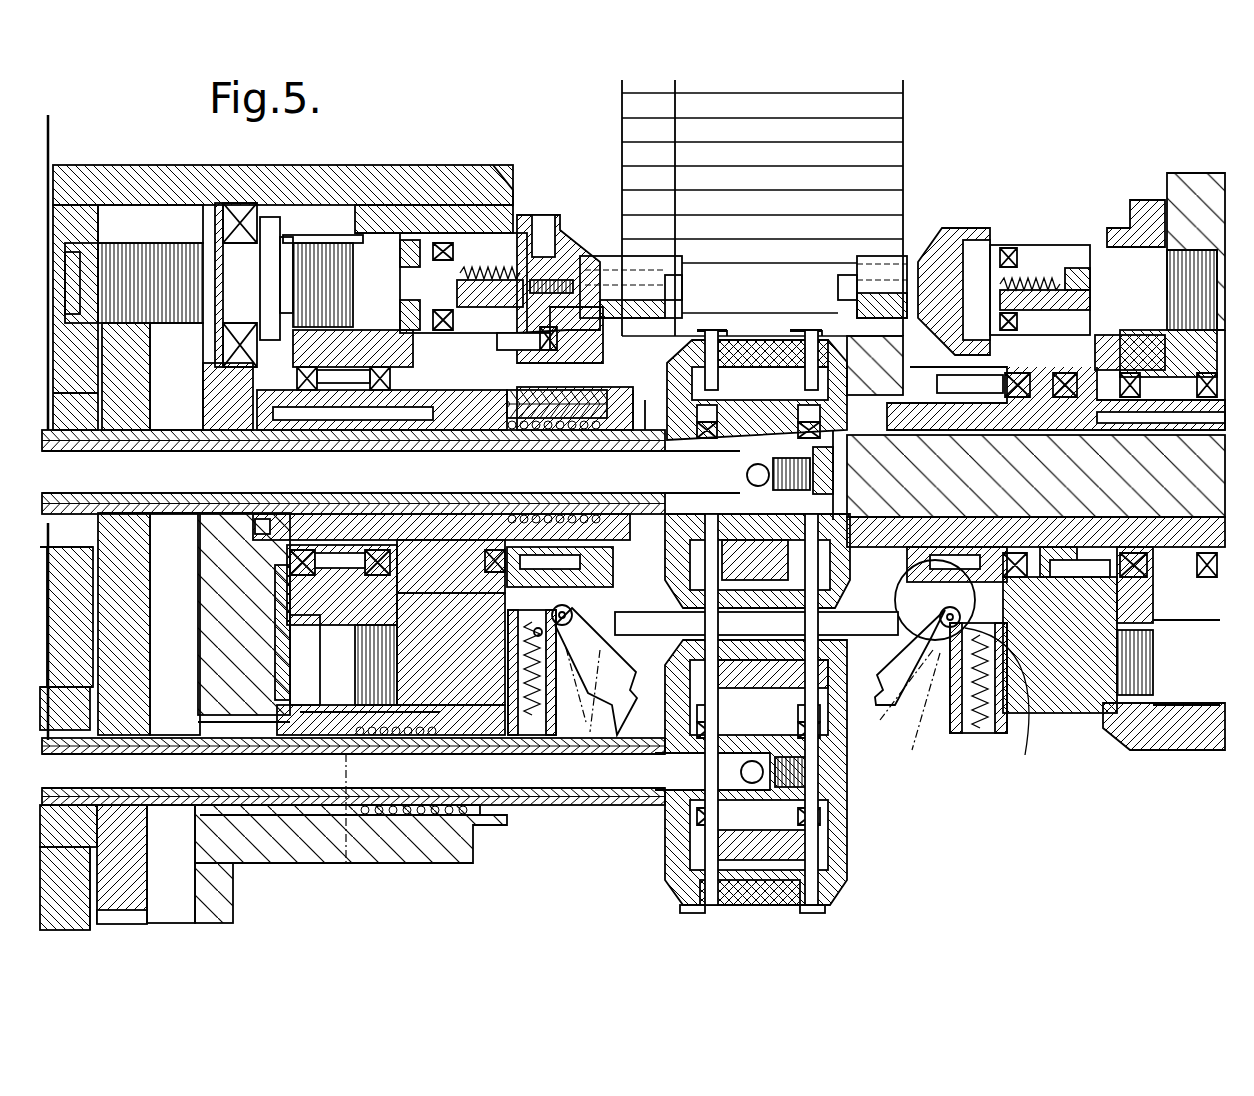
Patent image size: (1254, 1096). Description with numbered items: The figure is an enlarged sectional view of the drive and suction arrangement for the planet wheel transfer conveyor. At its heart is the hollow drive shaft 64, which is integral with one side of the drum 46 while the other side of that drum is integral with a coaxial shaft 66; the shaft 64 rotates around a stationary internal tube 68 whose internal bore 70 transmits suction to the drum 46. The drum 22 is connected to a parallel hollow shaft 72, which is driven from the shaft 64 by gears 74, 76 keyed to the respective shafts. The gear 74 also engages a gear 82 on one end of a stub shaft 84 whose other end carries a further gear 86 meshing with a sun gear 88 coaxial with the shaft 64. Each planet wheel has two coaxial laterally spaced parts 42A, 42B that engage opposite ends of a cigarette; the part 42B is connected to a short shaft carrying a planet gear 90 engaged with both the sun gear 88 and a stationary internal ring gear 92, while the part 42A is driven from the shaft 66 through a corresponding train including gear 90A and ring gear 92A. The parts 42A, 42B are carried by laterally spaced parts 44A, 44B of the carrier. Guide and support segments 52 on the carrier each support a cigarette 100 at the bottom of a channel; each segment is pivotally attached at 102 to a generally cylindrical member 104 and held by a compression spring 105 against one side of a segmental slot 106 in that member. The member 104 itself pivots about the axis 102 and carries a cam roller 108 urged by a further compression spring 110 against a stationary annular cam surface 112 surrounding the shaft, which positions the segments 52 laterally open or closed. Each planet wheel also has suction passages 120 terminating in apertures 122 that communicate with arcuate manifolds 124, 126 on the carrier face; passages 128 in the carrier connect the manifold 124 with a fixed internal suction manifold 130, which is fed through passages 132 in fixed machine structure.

The drum 22 is at (850, 848).
The planet wheel part 42A is at (913, 257).
The planet wheel part 42B is at (608, 257).
The carrier part 44A is at (1060, 690).
The carrier part 44B is at (402, 660).
The drum 46 is at (837, 388).
The guide and support segment 52 is at (613, 705).
The hollow drive shaft 64 is at (647, 430).
The coaxial shaft 66 is at (1073, 300).
The stationary internal tube 68 is at (537, 493).
The internal bore 70 is at (391, 472).
The hollow shaft 72 is at (607, 808).
The gear 74 is at (133, 370).
The gear 76 is at (125, 692).
The gear 82 is at (135, 252).
The stub shaft 84 is at (267, 258).
The gear 86 is at (310, 257).
The sun gear 88 is at (293, 630).
The planet gear 90 is at (373, 258).
The gear 90A is at (1138, 250).
The stationary internal ring gear 92 is at (352, 678).
The ring gear 92A is at (1147, 677).
The cigarette 100 is at (888, 230).
The pivot axis 102 is at (1033, 710).
The generally cylindrical member 104 is at (920, 597).
The compression spring 105 is at (945, 700).
The segmental slot 106 is at (933, 627).
The cam roller 108 is at (985, 545).
The compression spring 110 is at (987, 680).
The cam surface 112 is at (607, 563).
The suction passage 120 is at (600, 270).
The aperture 122 is at (567, 235).
The arcuate suction manifold 124 is at (558, 345).
The exhaust manifold 126 is at (533, 217).
The passage 128 is at (463, 340).
The fixed suction manifold 130 is at (422, 363).
The passage 132 is at (313, 410).